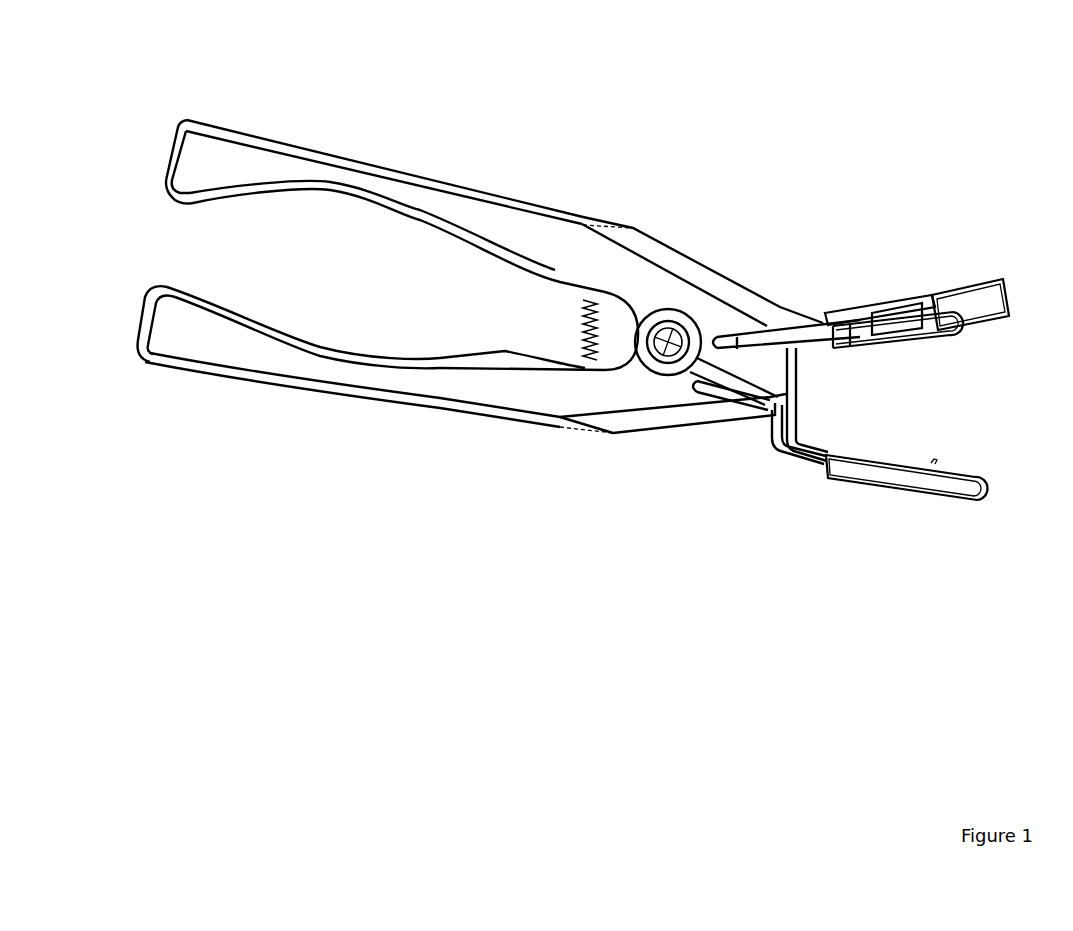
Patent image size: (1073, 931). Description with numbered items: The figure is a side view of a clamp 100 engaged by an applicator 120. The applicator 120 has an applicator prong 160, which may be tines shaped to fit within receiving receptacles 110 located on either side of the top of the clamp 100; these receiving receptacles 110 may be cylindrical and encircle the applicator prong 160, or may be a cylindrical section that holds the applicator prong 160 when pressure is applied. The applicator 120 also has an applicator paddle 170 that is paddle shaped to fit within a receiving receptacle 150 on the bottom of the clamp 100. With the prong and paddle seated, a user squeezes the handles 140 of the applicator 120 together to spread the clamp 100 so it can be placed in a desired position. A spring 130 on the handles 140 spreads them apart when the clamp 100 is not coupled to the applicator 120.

The clamp 100 is at (940, 278).
The receiving receptacles 110 is at (878, 287).
The applicator 120 is at (533, 507).
The spring 130 is at (566, 317).
The handles 140 is at (307, 343).
The receiving receptacle 150 is at (918, 503).
The applicator prong 160 is at (815, 317).
The applicator paddle 170 is at (806, 474).